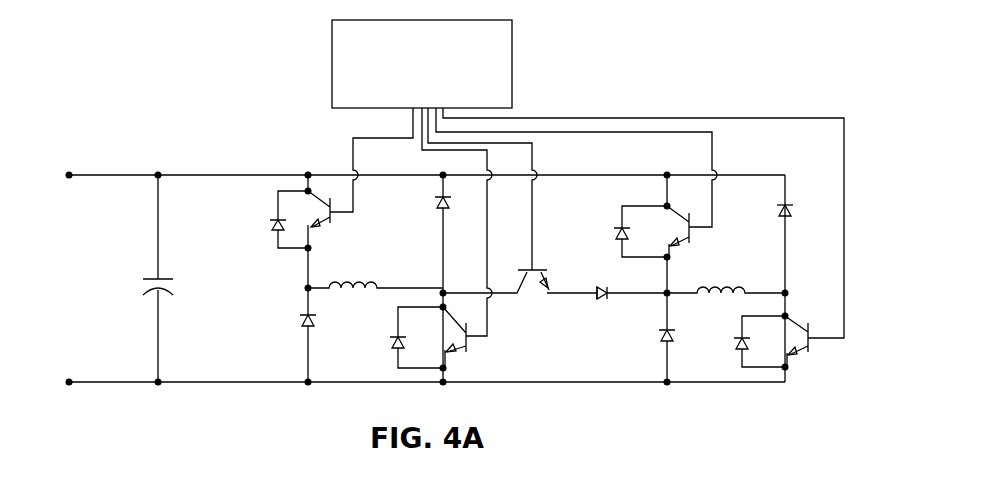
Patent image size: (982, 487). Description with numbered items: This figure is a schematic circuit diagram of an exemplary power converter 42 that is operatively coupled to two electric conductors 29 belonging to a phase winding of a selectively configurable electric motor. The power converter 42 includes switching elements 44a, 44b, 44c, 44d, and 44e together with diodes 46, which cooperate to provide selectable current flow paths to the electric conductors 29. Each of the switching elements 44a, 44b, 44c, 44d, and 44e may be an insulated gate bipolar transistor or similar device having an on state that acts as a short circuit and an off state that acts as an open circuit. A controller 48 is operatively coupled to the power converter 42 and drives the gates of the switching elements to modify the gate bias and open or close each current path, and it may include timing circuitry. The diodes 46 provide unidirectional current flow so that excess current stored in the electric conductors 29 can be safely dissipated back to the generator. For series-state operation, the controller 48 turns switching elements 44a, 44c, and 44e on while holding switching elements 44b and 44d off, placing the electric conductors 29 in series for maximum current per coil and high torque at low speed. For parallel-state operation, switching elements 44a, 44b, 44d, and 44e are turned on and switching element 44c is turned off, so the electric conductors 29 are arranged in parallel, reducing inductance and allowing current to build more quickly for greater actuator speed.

The power converter 42 is at (110, 158).
The controller 48 is at (431, 74).
The switching element 44a is at (340, 220).
The switching element 44b is at (478, 349).
The switching element 44c is at (541, 262).
The switching element 44d is at (699, 237).
The switching element 44e is at (818, 348).
The diodes 46 is at (290, 322).
The electric conductors 29 is at (345, 310).